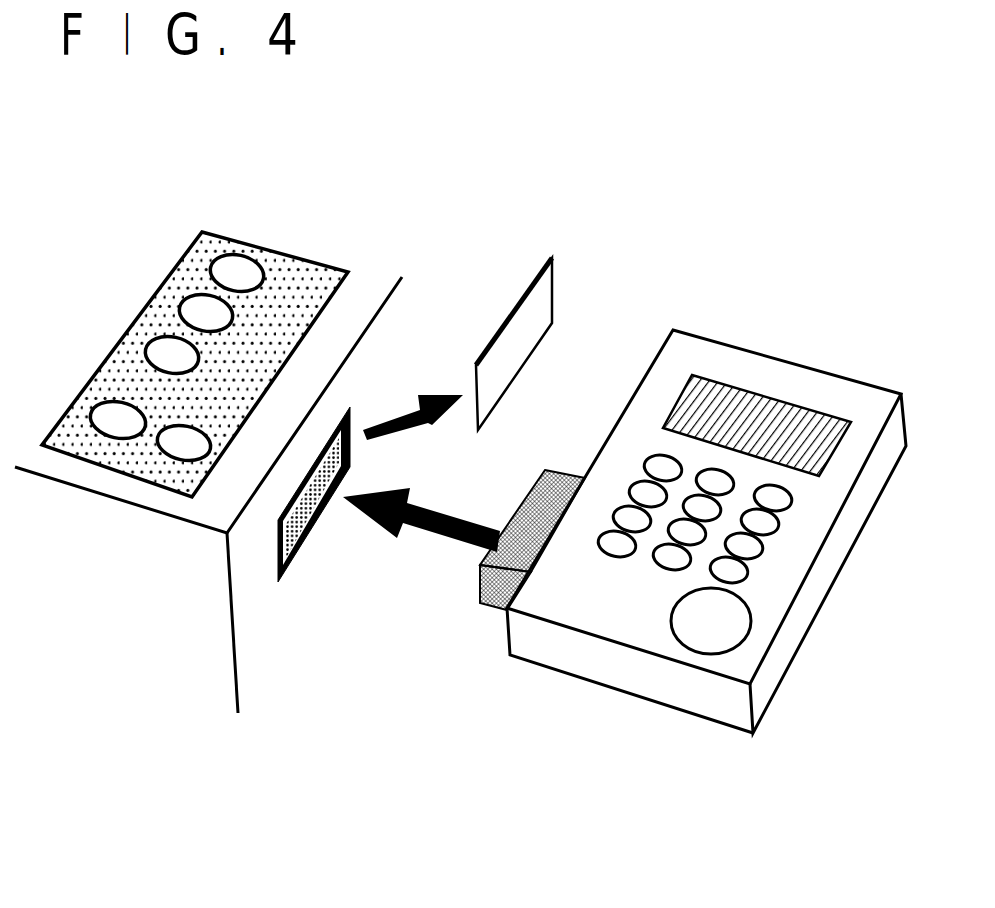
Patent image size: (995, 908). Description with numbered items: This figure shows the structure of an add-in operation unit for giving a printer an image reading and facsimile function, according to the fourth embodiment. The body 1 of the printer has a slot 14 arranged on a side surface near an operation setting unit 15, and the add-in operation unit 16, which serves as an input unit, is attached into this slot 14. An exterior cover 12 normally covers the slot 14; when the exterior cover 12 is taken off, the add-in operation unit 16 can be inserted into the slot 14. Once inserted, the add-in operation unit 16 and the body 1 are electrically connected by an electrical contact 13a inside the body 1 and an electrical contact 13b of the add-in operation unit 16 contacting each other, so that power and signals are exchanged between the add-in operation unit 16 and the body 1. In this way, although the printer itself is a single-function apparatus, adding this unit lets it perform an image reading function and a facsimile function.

The body 1 is at (376, 315).
The exterior cover 12 is at (545, 295).
The electrical contact 13a is at (311, 528).
The electrical contact 13b is at (481, 605).
The slot 14 is at (234, 555).
The operation setting unit 15 is at (302, 290).
The add-in operation unit 16 is at (734, 352).